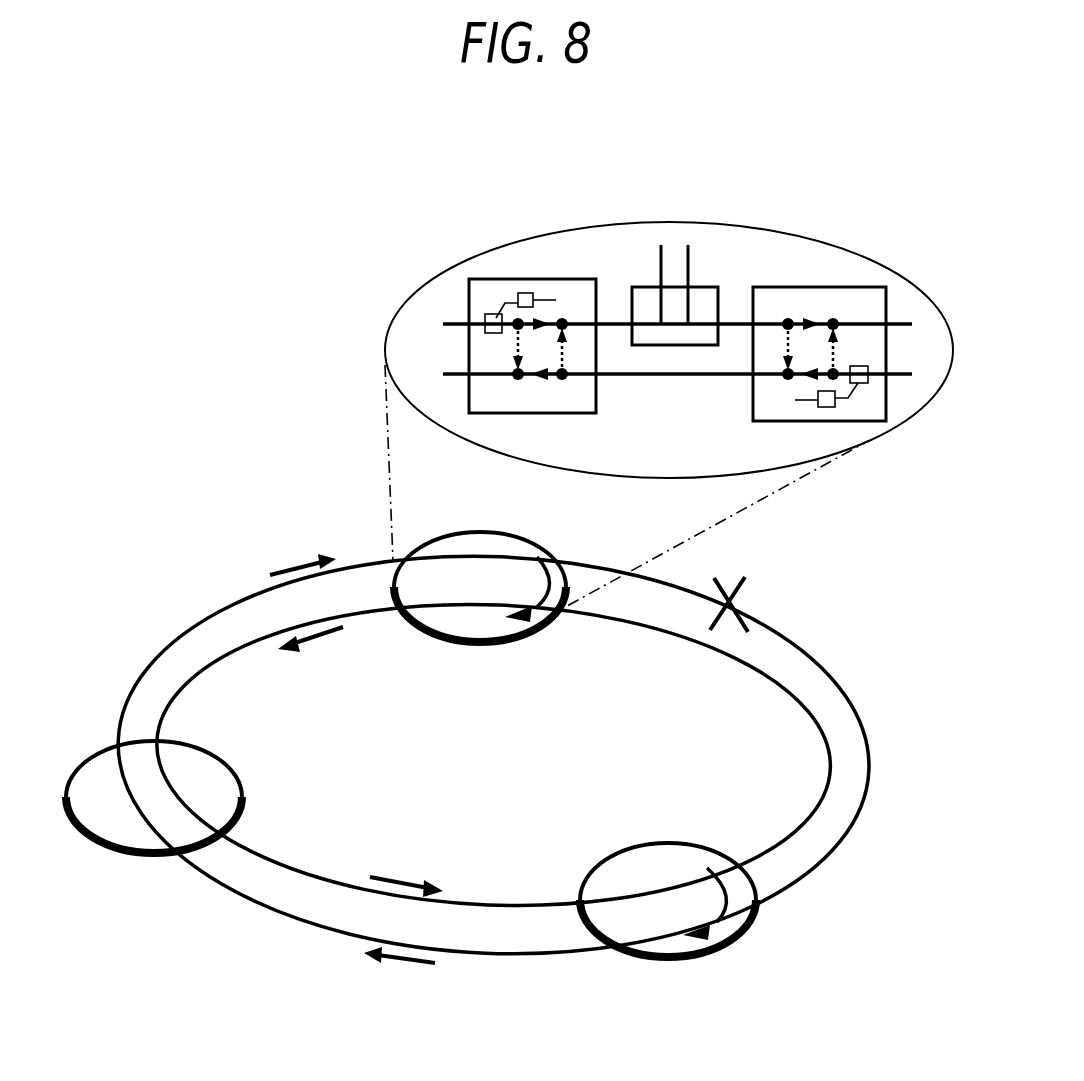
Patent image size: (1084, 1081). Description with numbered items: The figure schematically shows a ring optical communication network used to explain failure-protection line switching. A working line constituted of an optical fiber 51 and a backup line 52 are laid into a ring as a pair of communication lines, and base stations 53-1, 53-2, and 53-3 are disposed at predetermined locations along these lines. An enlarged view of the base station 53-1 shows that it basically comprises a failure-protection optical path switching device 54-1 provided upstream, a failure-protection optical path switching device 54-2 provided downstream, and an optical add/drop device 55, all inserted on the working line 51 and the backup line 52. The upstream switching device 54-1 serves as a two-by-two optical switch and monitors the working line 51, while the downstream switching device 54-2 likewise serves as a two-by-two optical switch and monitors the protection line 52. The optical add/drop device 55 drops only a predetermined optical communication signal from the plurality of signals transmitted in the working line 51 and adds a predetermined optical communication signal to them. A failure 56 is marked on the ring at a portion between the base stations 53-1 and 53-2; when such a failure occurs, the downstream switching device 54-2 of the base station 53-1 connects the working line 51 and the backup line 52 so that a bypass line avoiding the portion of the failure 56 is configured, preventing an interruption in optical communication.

The working line 51 is at (458, 323).
The backup line 52 is at (455, 373).
The base station 53-1 is at (480, 642).
The base station 53-2 is at (670, 957).
The base station 53-3 is at (142, 853).
The failure-protection optical path switching device 54-1 is at (509, 279).
The failure-protection optical path switching device 54-2 is at (855, 287).
The optical add/drop device 55 is at (703, 287).
The failure 56 is at (742, 600).